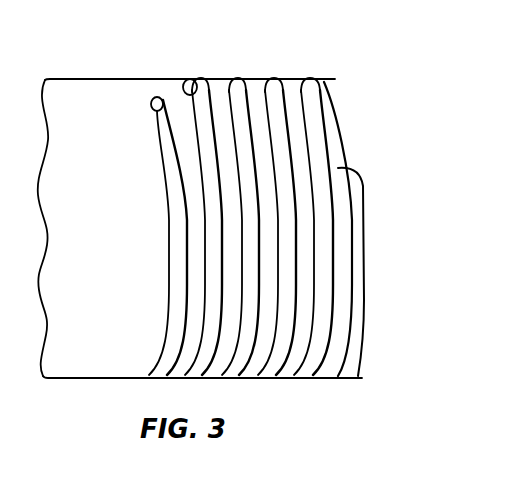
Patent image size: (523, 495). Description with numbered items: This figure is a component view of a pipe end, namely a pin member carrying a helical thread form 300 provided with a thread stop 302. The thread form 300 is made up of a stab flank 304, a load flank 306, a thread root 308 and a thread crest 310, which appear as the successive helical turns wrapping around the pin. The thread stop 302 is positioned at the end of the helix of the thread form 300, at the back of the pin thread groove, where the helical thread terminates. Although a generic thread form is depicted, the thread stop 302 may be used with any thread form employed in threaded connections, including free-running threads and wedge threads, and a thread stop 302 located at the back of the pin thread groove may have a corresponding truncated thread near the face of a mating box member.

The helical thread form 300 is at (226, 200).
The thread stop 302 is at (150, 106).
The stab flank 304 is at (222, 100).
The load flank 306 is at (186, 80).
The thread root 308 is at (202, 124).
The thread crest 310 is at (200, 80).